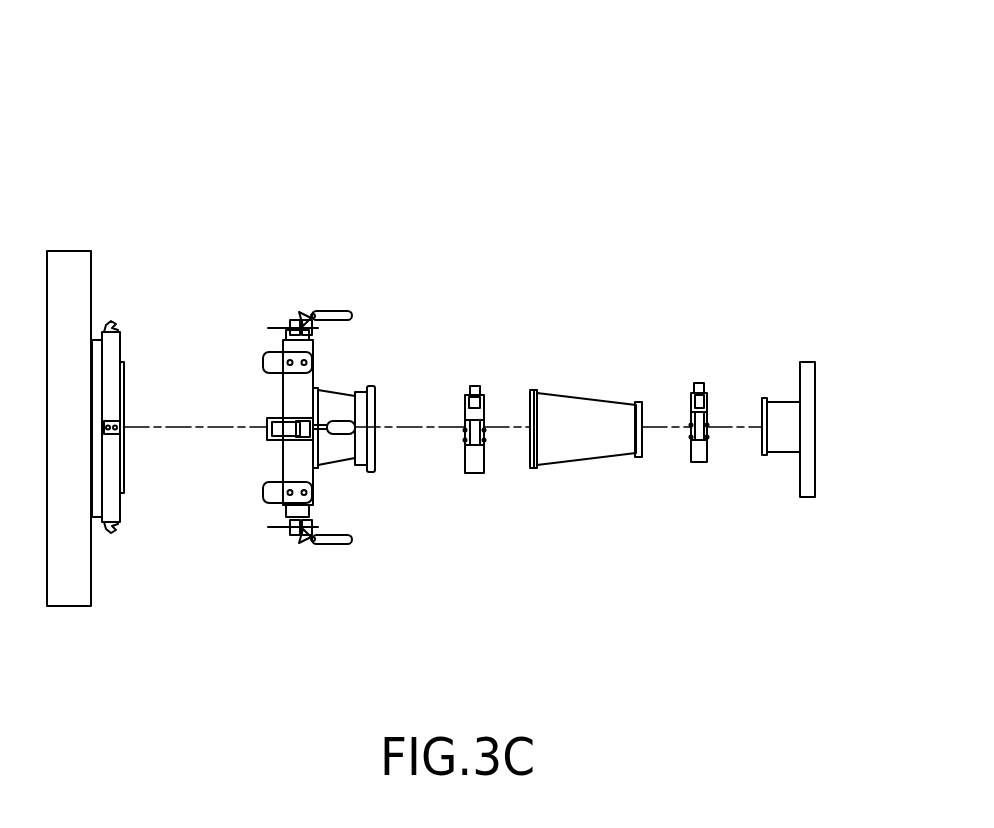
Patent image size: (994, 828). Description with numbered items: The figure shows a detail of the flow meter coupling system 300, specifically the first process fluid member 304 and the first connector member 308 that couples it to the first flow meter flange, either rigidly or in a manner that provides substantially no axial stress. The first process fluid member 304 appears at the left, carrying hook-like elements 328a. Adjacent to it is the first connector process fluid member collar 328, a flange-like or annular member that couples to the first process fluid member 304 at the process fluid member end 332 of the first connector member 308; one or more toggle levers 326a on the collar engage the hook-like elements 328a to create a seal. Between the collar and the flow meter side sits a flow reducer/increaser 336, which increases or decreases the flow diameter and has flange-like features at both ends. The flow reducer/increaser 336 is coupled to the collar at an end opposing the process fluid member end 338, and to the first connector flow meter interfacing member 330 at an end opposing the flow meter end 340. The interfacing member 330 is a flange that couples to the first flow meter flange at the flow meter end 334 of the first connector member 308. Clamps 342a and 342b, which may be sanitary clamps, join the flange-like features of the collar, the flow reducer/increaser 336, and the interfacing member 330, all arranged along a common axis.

The flow meter coupling system 300 is at (122, 82).
The first process fluid member 304 is at (72, 252).
The first connector member 308 is at (828, 265).
The toggle lever 326a is at (348, 545).
The first connector process fluid member collar 328 is at (287, 532).
The hook-like elements 328a is at (108, 530).
The first connector flow meter interfacing member 330 is at (813, 343).
The process fluid member end 332 is at (258, 280).
The flow meter end 334 is at (785, 207).
The flow reducer/increaser 336 is at (588, 462).
The end opposing the process fluid member end 338 is at (377, 473).
The end opposing the flow meter end 340 is at (675, 468).
The clamp 342a is at (478, 386).
The clamp 342b is at (700, 383).